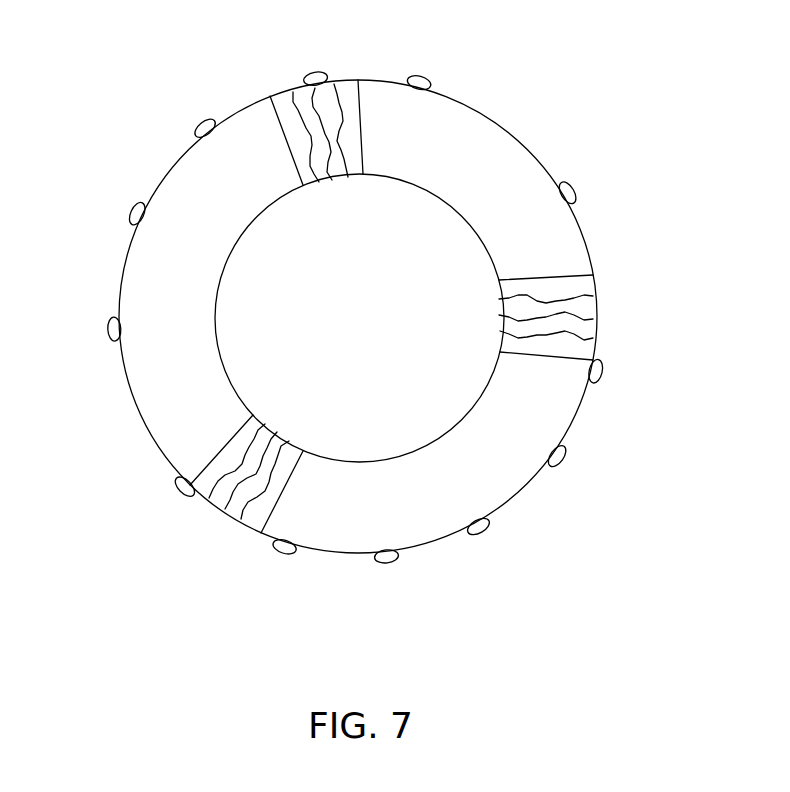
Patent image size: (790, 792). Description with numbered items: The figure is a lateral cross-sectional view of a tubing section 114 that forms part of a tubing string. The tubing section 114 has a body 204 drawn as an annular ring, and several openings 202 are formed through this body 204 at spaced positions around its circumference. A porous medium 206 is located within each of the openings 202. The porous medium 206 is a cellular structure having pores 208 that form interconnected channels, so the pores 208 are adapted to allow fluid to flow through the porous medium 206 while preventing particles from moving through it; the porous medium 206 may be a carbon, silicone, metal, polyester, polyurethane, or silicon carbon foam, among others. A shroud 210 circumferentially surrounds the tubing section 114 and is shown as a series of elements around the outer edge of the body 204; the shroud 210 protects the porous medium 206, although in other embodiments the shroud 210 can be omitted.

The tubing section 114 is at (96, 67).
The openings 202 is at (420, 295).
The body 204 is at (474, 203).
The porous medium 206 is at (354, 95).
The pores 208 is at (300, 96).
The shroud 210 is at (608, 382).